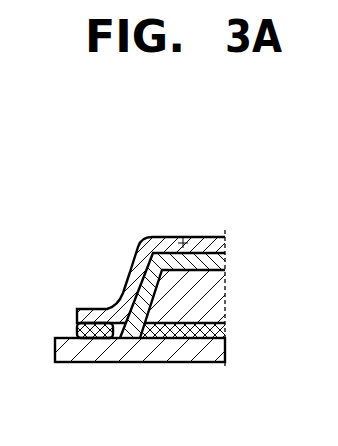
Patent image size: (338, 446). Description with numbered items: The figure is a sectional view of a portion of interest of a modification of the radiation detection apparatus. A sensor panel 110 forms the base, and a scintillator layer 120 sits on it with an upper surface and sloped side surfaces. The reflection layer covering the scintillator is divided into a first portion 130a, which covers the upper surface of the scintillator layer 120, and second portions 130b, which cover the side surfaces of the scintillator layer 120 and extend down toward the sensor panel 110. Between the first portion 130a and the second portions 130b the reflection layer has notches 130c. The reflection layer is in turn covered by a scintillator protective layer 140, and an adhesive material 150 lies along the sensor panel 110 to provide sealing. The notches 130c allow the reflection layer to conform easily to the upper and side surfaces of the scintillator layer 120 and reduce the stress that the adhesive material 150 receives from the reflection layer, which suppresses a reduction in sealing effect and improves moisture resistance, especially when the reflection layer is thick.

The sensor panel 110 is at (243, 322).
The scintillator layer 120 is at (225, 297).
The portion (first portion) of the reflection layer 130a is at (225, 263).
The portions (second portions) of the reflection layer 130b is at (125, 292).
The notches 130c is at (183, 237).
The scintillator protective layer 140 is at (225, 243).
The adhesive material 150 is at (108, 339).